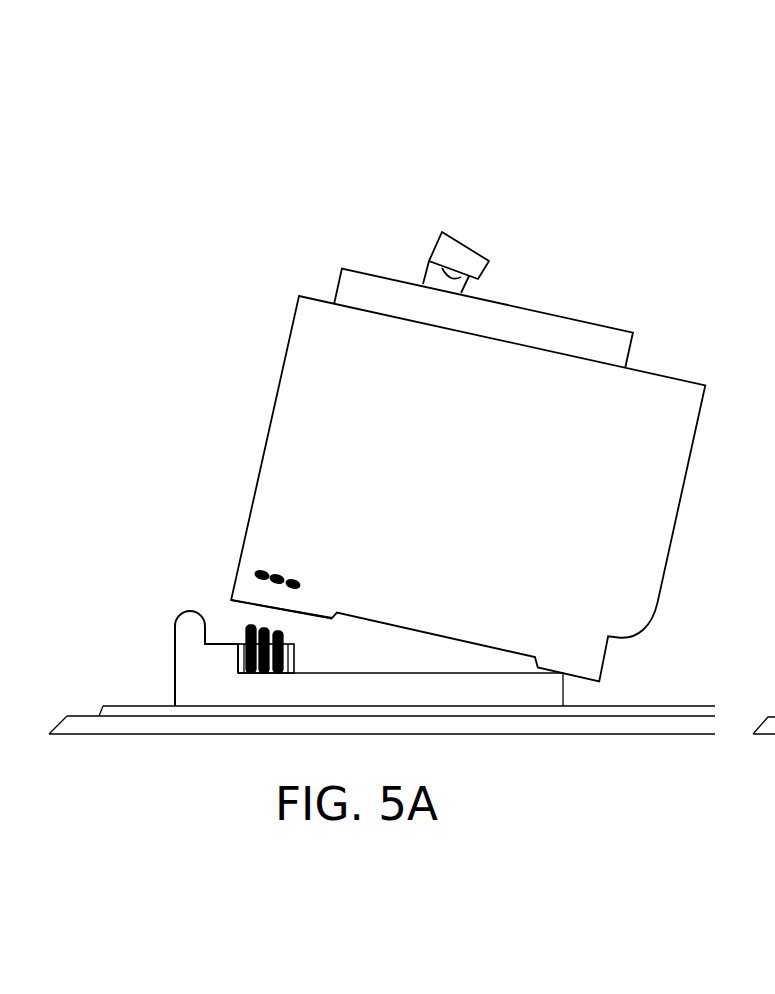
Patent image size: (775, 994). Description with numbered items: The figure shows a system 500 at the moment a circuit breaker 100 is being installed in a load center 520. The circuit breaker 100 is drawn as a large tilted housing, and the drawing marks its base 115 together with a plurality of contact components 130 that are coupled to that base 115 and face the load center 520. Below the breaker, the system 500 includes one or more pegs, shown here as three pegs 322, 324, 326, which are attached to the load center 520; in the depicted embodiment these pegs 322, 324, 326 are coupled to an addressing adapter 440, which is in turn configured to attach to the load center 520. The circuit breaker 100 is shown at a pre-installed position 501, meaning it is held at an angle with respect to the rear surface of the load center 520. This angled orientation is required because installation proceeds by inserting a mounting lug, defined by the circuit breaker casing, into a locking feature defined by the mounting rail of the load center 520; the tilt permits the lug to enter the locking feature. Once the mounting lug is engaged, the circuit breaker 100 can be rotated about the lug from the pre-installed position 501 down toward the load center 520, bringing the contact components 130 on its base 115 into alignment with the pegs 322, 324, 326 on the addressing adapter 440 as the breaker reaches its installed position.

The system 500 is at (421, 398).
The pre-installed position 501 is at (583, 303).
The circuit breaker 100 is at (643, 442).
The base 115 is at (253, 587).
The contact components 130 is at (275, 573).
The peg 322 is at (245, 623).
The peg 324 is at (266, 627).
The peg 326 is at (283, 637).
The addressing adapter 440 is at (296, 660).
The load center 520 is at (188, 668).